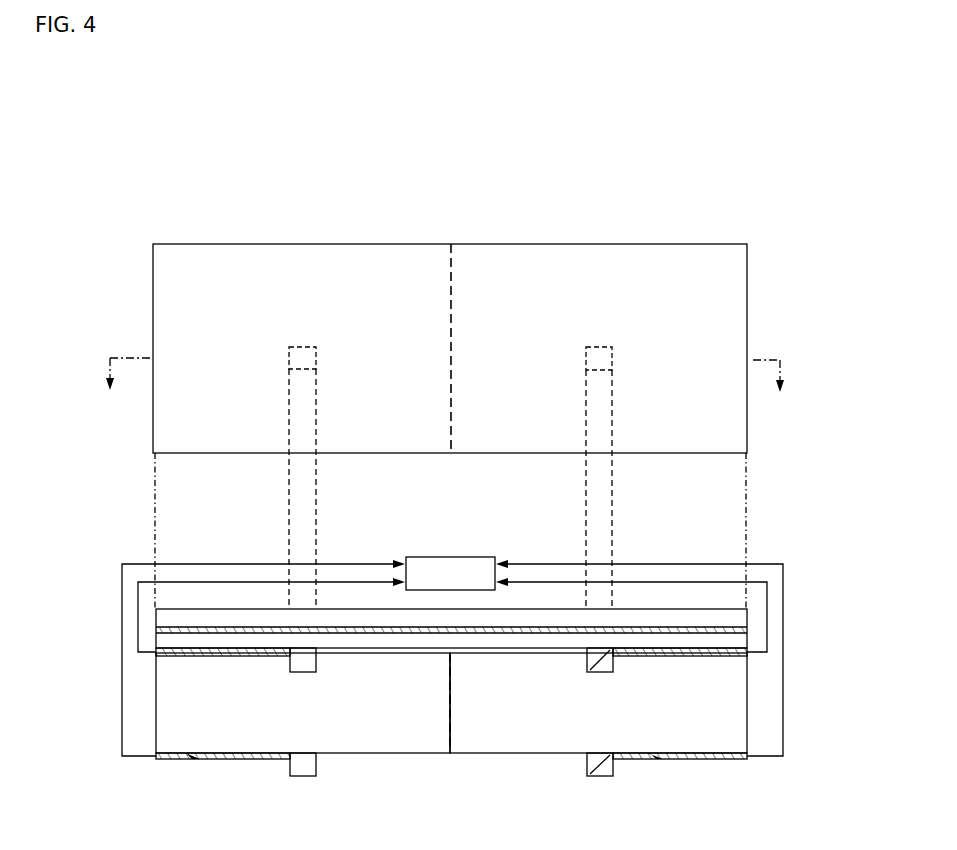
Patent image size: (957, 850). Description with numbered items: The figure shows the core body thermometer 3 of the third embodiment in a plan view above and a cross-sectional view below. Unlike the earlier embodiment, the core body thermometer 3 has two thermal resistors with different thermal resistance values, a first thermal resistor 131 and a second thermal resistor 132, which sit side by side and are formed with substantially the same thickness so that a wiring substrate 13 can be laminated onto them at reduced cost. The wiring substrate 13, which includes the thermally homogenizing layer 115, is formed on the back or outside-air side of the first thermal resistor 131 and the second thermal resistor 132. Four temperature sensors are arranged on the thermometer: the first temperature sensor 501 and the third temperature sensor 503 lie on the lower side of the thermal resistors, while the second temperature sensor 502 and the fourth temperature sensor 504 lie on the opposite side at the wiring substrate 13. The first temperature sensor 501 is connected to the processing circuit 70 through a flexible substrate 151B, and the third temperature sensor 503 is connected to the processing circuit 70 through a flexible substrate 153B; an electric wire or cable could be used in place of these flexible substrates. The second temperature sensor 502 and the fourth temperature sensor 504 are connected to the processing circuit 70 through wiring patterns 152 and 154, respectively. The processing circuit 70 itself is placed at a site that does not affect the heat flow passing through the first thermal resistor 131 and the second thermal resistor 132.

The core body thermometer 3 is at (558, 190).
The processing circuit 70 is at (450, 556).
The wiring substrate 13 is at (451, 730).
The first thermal resistor 131 is at (400, 754).
The second thermal resistor 132 is at (472, 637).
The thermally homogenizing layer 115 is at (547, 630).
The wiring pattern 152 is at (225, 651).
The wiring pattern 154 is at (695, 651).
The second temperature sensor 502 is at (301, 347).
The fourth temperature sensor 504 is at (597, 347).
The first temperature sensor 501 is at (297, 777).
The third temperature sensor 503 is at (598, 777).
The flexible substrate 151B is at (172, 760).
The flexible substrate 153B is at (685, 760).